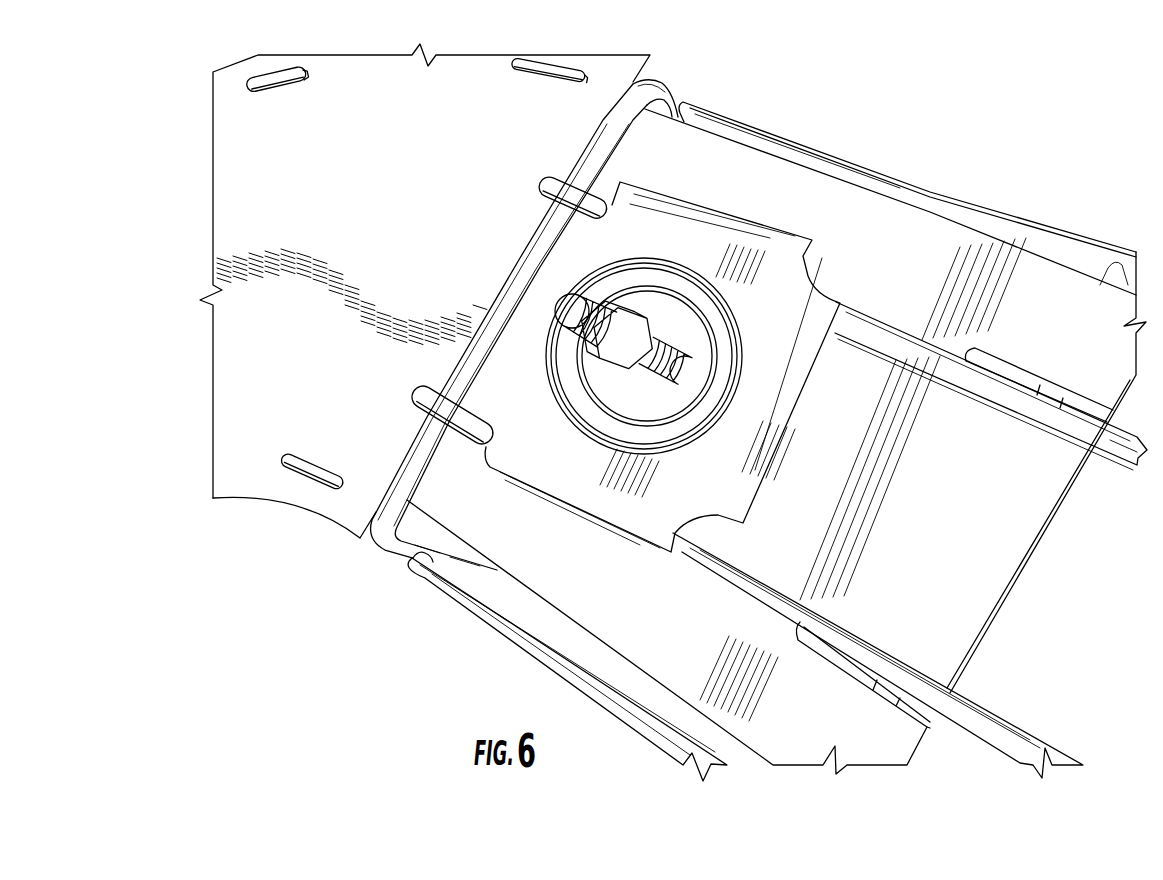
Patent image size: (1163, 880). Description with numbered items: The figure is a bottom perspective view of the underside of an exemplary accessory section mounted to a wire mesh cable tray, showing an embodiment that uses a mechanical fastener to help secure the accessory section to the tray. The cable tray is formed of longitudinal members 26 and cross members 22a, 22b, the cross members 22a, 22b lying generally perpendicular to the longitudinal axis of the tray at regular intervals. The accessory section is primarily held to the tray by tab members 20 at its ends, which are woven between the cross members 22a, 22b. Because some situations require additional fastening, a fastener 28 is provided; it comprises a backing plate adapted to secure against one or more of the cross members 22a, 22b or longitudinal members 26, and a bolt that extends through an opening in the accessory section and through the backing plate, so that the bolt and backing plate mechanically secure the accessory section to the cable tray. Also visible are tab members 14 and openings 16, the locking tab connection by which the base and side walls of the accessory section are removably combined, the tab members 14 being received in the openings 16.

The tab members 14 is at (278, 80).
The openings 16 is at (309, 488).
The tab member 20 is at (983, 568).
The cross member 22a is at (607, 142).
The cross member 22b is at (910, 698).
The longitudinal member 26 is at (948, 362).
The fastener 28 is at (784, 327).